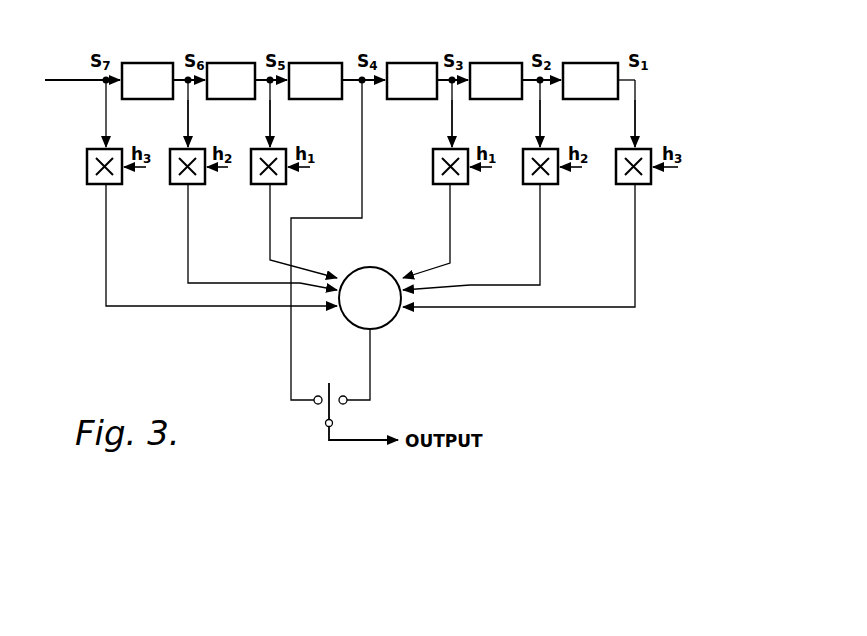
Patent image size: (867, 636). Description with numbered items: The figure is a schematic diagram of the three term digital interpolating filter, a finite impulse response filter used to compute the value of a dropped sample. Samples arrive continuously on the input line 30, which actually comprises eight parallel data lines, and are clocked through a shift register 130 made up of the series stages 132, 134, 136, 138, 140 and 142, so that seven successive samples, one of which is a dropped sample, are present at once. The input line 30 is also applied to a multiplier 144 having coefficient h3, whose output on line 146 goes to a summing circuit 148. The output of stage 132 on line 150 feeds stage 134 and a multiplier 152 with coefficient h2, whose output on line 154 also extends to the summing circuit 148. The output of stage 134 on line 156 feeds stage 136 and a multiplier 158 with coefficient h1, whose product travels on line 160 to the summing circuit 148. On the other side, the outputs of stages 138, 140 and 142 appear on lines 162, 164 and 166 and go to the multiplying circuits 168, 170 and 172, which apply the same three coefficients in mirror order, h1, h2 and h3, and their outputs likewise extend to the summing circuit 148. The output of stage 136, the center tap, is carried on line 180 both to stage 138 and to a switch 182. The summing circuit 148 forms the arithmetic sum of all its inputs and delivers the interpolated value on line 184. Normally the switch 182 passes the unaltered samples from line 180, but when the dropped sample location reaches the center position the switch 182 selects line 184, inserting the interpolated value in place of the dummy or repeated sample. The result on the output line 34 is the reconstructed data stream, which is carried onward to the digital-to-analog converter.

The input line 30 is at (54, 77).
The shift register 130 is at (674, 82).
The stage 132 is at (143, 63).
The stage 134 is at (228, 63).
The stage 136 is at (311, 63).
The stage 138 is at (408, 63).
The stage 140 is at (492, 63).
The stage 142 is at (590, 63).
The multiplier 144 is at (92, 185).
The line 146 is at (106, 283).
The summing circuit 148 is at (405, 321).
The line 150 is at (190, 120).
The multiplier 152 is at (176, 185).
The line 154 is at (188, 251).
The line 156 is at (272, 120).
The multiplier 158 is at (258, 185).
The line 160 is at (270, 248).
The line 162 is at (455, 124).
The line 164 is at (542, 122).
The line 166 is at (637, 122).
The multiplying circuit 168 is at (437, 185).
The multiplying circuit 170 is at (528, 185).
The multiplying circuit 172 is at (622, 185).
The line 180 is at (364, 128).
The switch 182 is at (325, 422).
The line 184 is at (371, 373).
The output line 34 is at (376, 443).